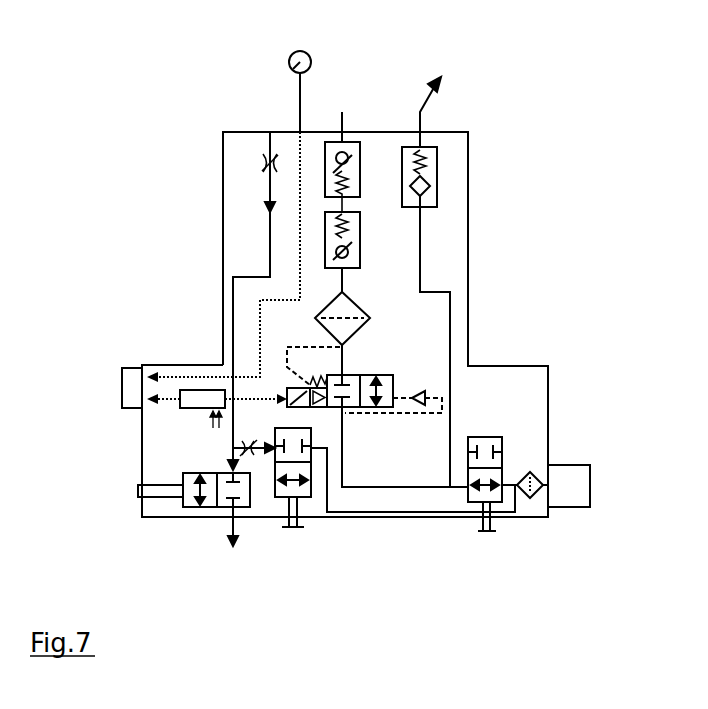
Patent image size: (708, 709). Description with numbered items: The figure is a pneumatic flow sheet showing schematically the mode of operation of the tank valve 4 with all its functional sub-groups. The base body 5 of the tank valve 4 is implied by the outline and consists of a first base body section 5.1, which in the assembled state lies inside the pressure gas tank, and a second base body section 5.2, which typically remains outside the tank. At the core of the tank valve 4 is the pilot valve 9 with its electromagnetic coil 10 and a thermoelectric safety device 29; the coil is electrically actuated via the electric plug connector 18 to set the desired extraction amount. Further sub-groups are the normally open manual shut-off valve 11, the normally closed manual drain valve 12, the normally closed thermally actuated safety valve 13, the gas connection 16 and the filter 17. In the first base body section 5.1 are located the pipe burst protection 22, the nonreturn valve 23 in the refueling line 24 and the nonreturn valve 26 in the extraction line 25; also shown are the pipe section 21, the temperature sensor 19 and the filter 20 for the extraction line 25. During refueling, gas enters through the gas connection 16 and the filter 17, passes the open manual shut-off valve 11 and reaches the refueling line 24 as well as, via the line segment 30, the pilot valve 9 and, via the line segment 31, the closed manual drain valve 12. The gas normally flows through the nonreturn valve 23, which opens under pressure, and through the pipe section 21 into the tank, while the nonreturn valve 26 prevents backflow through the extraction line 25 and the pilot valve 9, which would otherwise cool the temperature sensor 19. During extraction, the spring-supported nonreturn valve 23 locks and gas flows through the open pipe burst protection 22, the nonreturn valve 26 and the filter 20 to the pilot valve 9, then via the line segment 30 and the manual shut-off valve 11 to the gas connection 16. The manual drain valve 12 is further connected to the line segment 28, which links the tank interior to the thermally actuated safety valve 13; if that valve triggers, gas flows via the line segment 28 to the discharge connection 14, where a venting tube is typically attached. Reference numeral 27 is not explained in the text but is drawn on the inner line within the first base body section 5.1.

The tank valve 4 is at (353, 364).
The base body 5 is at (341, 364).
The first base body section 5.1 is at (222, 232).
The second base body section 5.2 is at (546, 519).
The pilot valve 9 is at (371, 404).
The electromagnetic coil 10 is at (289, 396).
The manual shut-off valve 11 is at (487, 503).
The manual drain valve 12 is at (292, 498).
The thermally actuated safety valve 13 is at (192, 506).
The discharge connection 14 is at (230, 522).
The gas connection 16 is at (572, 498).
The filter 17 is at (538, 478).
The electric plug connector 18 is at (136, 393).
The temperature sensor 19 is at (291, 55).
The filter 20 is at (299, 299).
The pipe section 21 is at (421, 112).
The pipe burst protection 22 is at (355, 170).
The nonreturn valve 23 is at (428, 178).
The refueling line 24 is at (451, 291).
The extraction line 25 is at (340, 344).
The nonreturn valve 26 is at (338, 244).
The throttle 27 is at (262, 162).
The line segment 28 is at (341, 362).
The thermoelectric safety device 29 is at (180, 393).
The line segment 30 is at (350, 489).
The line segment 31 is at (443, 514).